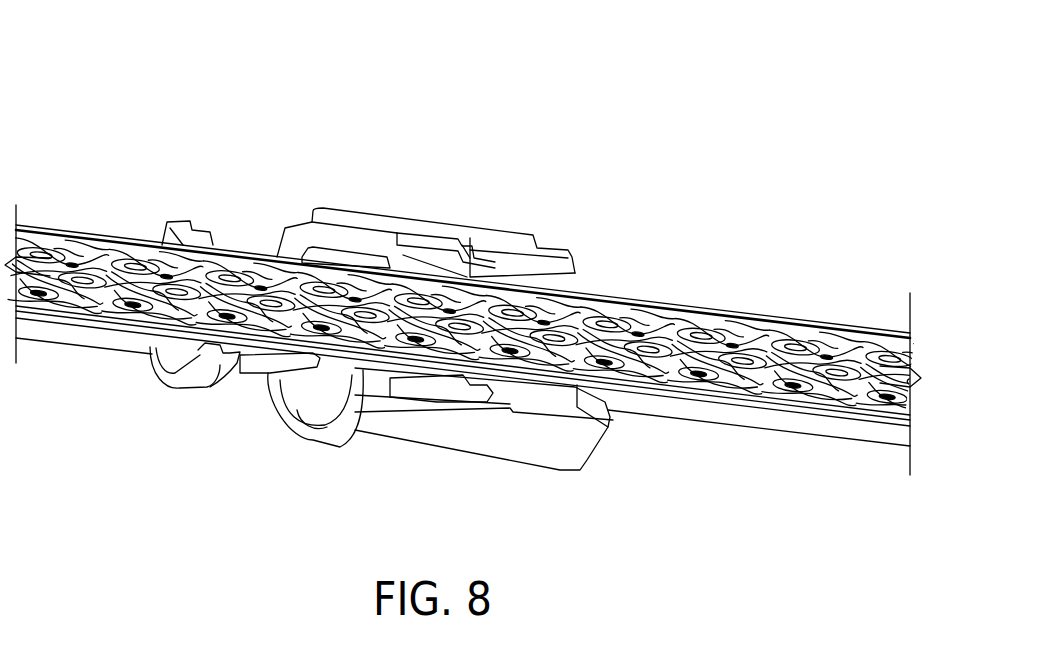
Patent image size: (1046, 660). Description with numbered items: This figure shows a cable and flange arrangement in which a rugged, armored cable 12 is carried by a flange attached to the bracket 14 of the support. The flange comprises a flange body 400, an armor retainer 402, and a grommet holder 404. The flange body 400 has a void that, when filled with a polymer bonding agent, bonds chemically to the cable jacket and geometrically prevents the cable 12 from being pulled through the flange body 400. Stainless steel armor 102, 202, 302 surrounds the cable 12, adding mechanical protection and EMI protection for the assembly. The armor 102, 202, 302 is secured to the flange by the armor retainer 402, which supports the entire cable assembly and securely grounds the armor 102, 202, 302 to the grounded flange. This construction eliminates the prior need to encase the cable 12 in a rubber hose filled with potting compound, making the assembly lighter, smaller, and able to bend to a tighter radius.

The bracket 14 is at (465, 147).
The cable 12 is at (678, 337).
The flange body 400 is at (300, 230).
The armor retainer 402 is at (428, 260).
The grommet holder 404 is at (492, 233).
The stainless steel armor 102 is at (468, 430).
The stainless steel armor 202 is at (468, 430).
The stainless steel armor 302 is at (461, 375).